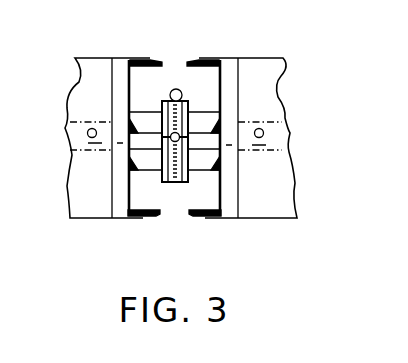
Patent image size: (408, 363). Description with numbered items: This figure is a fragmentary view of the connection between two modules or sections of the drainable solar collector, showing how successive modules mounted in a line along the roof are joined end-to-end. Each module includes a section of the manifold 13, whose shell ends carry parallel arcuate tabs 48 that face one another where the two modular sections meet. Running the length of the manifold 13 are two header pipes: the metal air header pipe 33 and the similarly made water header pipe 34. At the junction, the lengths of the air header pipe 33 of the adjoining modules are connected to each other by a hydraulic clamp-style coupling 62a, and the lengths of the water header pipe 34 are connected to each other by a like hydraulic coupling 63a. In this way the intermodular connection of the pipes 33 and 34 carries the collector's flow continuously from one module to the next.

The manifold 13 is at (83, 190).
The air header pipe 33 is at (148, 158).
The water header pipe 34 is at (208, 122).
The arcuate tabs 48 is at (197, 63).
The hydraulic coupling 62a is at (183, 142).
The hydraulic coupling 63a is at (167, 108).